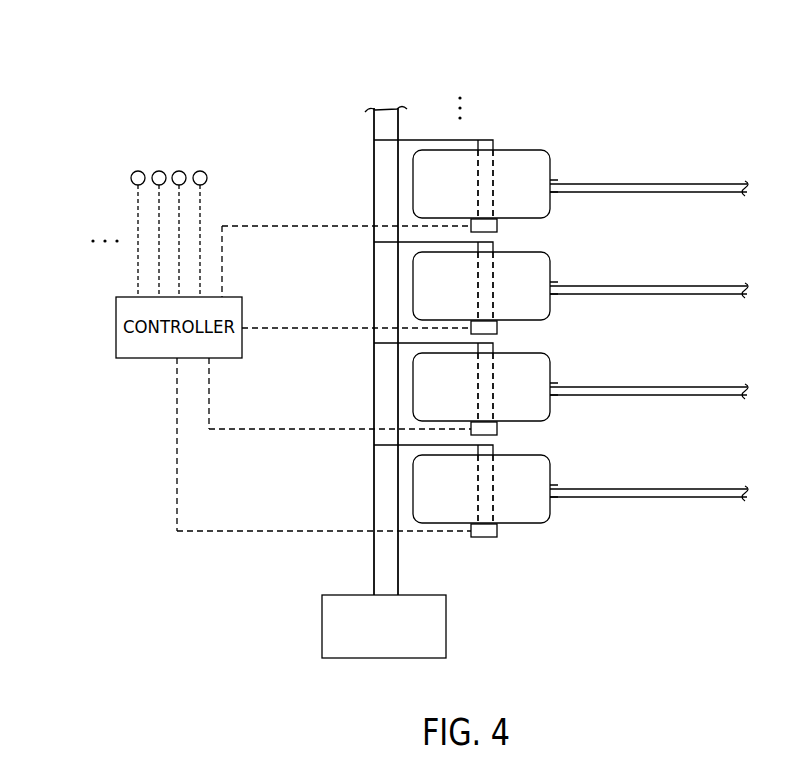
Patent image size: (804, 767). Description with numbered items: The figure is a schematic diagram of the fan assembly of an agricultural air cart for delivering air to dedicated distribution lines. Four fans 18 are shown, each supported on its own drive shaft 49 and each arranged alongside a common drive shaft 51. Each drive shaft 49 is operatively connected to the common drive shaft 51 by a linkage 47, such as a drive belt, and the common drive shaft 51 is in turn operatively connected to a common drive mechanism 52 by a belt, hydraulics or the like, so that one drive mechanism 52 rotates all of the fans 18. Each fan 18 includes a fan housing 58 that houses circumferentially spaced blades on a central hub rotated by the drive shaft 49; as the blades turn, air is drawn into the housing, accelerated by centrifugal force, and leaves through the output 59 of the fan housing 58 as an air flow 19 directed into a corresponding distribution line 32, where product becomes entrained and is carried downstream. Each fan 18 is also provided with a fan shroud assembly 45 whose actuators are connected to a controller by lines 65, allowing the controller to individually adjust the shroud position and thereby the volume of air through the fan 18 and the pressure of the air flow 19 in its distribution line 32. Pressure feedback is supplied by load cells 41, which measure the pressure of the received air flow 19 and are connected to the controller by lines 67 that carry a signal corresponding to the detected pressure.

The air flow 19 is at (325, 80).
The load cell 41 is at (159, 170).
The lines 67 is at (159, 220).
The lines 65 is at (293, 226).
The common drive shaft 51 is at (387, 176).
The linkage 47 is at (428, 139).
The fan 18 is at (458, 195).
The drive shaft 49 is at (492, 196).
The fan shroud assembly 45 is at (497, 224).
The fan housing 58 is at (552, 163).
The output 59 is at (552, 193).
The distribution line 32 is at (668, 183).
The common drive mechanism 52 is at (322, 628).